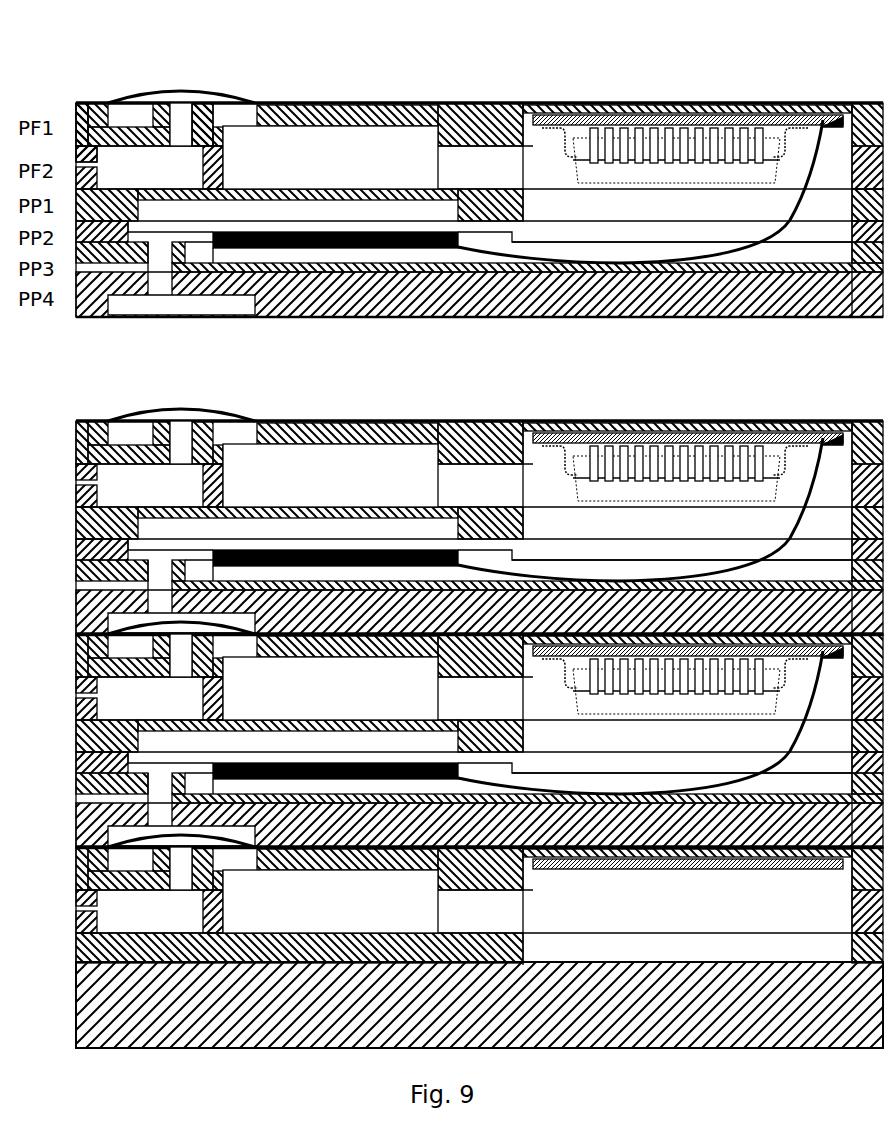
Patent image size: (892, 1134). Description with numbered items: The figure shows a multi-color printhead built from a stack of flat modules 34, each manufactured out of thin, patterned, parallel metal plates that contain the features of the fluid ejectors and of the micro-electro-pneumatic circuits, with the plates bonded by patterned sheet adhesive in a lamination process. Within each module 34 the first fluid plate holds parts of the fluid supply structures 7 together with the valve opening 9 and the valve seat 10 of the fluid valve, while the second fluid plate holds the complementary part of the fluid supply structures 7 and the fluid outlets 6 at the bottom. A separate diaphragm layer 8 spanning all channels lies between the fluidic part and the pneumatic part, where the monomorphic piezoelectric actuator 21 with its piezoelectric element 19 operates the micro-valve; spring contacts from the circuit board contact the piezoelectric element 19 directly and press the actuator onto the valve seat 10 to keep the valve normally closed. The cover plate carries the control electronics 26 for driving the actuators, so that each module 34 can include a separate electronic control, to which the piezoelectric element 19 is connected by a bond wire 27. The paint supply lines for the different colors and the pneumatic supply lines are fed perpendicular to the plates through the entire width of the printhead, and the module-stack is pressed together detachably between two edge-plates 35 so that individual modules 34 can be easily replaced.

The fluid outlet 6 is at (88, 158).
The fluid supply structure 7 is at (288, 168).
The diaphragm layer 8 is at (243, 97).
The valve opening 9 is at (182, 113).
The valve seat 10 is at (203, 103).
The piezoelectric element 19 is at (237, 247).
The monomorphic piezoelectric actuator 21 is at (188, 227).
The control electronics 26 is at (682, 145).
The bond wire 27 is at (788, 232).
The flat module 34 is at (462, 100).
The edge-plate 35 is at (602, 1030).